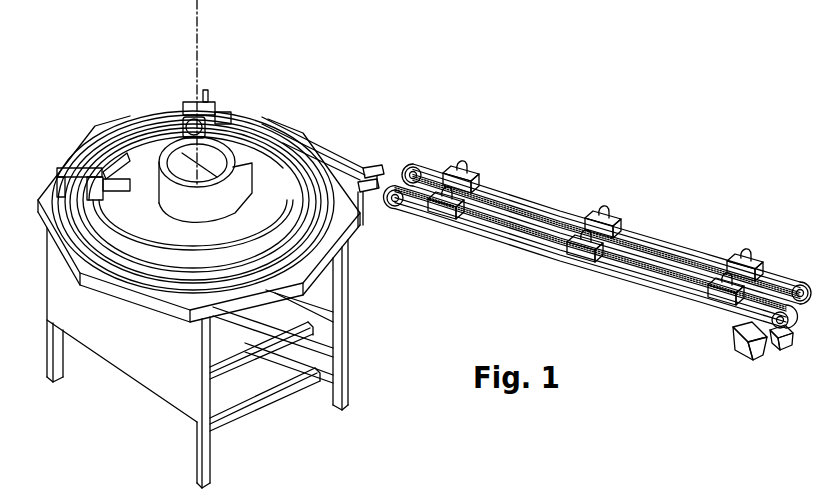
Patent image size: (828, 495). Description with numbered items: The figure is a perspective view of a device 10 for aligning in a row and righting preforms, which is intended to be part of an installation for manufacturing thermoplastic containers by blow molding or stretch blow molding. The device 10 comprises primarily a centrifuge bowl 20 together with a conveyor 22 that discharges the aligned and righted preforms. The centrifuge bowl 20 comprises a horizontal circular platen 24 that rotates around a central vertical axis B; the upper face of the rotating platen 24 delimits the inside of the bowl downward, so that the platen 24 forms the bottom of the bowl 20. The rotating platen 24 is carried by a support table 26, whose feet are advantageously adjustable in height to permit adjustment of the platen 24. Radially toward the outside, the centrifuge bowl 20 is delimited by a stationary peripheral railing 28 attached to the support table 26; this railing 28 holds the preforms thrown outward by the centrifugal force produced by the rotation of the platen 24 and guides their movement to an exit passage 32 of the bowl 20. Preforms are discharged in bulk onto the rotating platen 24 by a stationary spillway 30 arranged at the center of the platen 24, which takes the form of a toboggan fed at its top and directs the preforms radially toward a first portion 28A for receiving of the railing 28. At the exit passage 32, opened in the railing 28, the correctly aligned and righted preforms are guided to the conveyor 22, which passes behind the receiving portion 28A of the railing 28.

The device 10 is at (380, 119).
The centrifuge bowl 20 is at (262, 155).
The conveyor 22 is at (569, 192).
The horizontal circular platen 24 is at (153, 240).
The support table 26 is at (347, 302).
The stationary peripheral railing 28 is at (150, 272).
The first portion for receiving 28A is at (238, 136).
The stationary spillway 30 is at (177, 165).
The exit passage 32 is at (218, 116).
The central vertical axis B is at (197, 13).